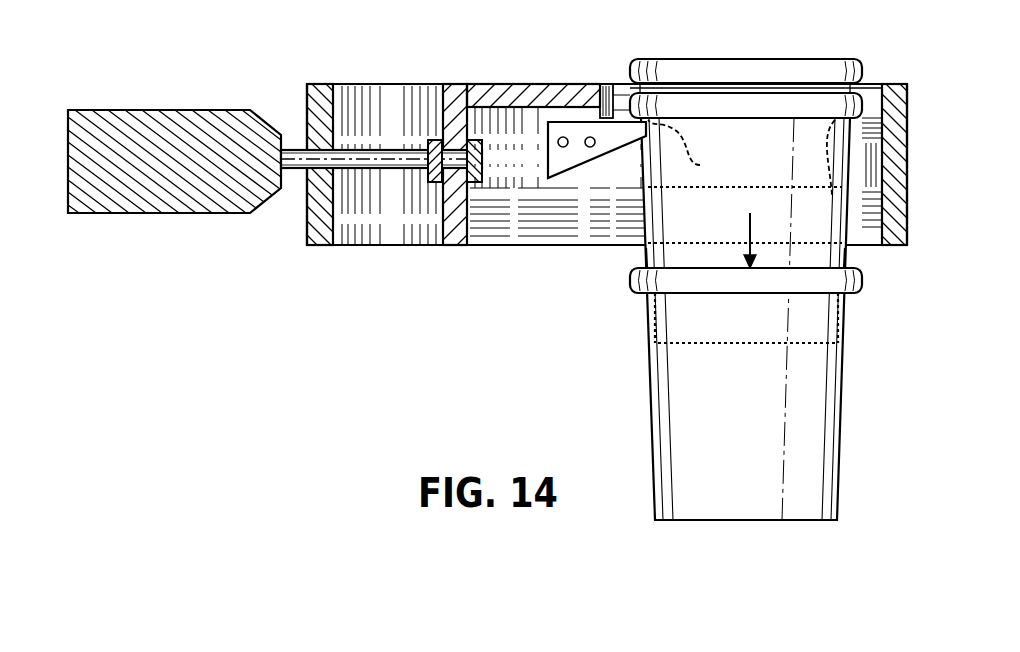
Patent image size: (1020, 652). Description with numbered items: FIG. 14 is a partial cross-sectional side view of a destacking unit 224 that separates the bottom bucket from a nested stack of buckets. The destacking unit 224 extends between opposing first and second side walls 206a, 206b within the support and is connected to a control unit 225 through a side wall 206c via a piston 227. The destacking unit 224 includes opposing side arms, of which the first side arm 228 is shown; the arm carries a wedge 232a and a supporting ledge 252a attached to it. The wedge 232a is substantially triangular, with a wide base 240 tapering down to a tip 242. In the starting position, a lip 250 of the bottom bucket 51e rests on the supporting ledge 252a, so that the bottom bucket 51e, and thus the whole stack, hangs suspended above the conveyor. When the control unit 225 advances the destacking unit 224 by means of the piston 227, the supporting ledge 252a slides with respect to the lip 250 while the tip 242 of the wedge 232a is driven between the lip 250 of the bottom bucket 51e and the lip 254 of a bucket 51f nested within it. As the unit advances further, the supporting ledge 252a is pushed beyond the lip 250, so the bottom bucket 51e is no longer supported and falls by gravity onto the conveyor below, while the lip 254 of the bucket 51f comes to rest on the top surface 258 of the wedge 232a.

The control unit 225 is at (143, 112).
The side wall 206c is at (296, 148).
The piston 227 is at (279, 134).
The second side wall 206b is at (390, 226).
The destacking unit 224 is at (462, 84).
The first side arm 228 is at (508, 103).
The wedge 232a is at (565, 113).
The top surface 258 is at (613, 105).
The first side wall 206a is at (886, 83).
The bottom bucket 51e is at (829, 453).
The supporting ledge 252a is at (745, 231).
The wide base 240 is at (549, 150).
The tip 242 is at (691, 148).
The lip 254 is at (828, 105).
The bucket 51f is at (648, 256).
The lip 250 is at (862, 281).